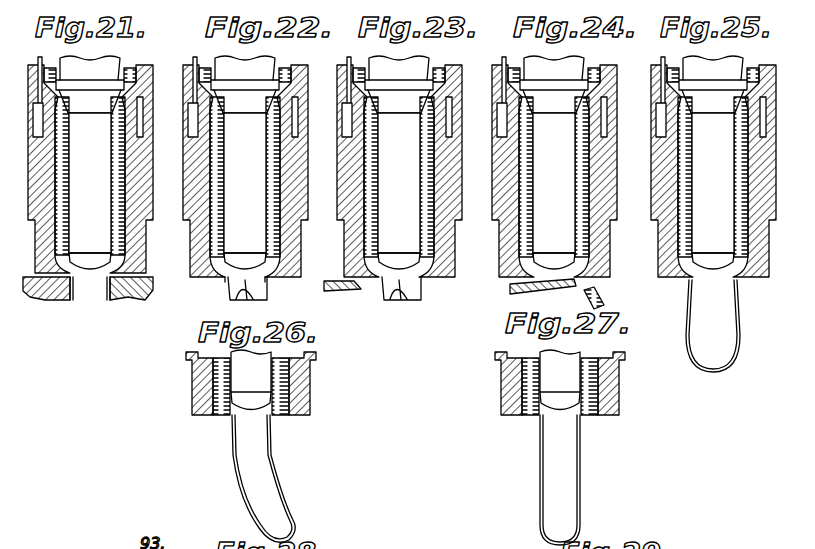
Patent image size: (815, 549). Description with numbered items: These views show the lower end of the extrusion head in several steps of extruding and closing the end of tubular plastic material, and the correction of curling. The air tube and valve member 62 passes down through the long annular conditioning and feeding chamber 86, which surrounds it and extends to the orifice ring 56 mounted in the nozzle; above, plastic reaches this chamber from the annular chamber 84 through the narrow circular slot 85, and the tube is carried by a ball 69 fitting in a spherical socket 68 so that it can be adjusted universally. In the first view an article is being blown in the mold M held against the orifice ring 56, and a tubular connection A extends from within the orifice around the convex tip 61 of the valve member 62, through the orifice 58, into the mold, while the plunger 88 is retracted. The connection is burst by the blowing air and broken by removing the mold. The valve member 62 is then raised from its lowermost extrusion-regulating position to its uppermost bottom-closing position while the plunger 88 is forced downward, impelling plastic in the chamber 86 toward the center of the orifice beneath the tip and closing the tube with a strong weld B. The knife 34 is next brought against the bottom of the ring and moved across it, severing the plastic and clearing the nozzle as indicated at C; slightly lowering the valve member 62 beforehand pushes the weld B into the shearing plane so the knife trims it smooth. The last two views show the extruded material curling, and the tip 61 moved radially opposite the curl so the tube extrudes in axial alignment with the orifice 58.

In FIG. 21, the orifice ring 56 is at (43, 297).
In FIG. 22, the orifice ring 56 is at (245, 181).
In FIG. 23, the orifice ring 56 is at (399, 185).
In FIG. 24, the orifice ring 56 is at (554, 167).
In FIG. 25, the orifice ring 56 is at (725, 178).
In FIG. 26, the orifice ring 56 is at (251, 404).
In FIG. 27, the orifice ring 56 is at (561, 403).
In FIG. 21, the orifice 58 is at (108, 309).
In FIG. 22, the orifice 58 is at (226, 292).
In FIG. 25, the orifice 58 is at (733, 326).
In FIG. 26, the orifice 58 is at (241, 478).
In FIG. 27, the orifice 58 is at (533, 480).
In FIG. 21, the convex tip 61 is at (85, 302).
In FIG. 22, the convex tip 61 is at (277, 264).
In FIG. 23, the convex tip 61 is at (432, 261).
In FIG. 25, the convex tip 61 is at (746, 258).
In FIG. 26, the convex tip 61 is at (206, 400).
In FIG. 27, the convex tip 61 is at (515, 398).
In FIG. 21, the air tube and valve member 62 is at (90, 183).
In FIG. 22, the air tube and valve member 62 is at (278, 183).
In FIG. 23, the air tube and valve member 62 is at (399, 183).
In FIG. 24, the air tube and valve member 62 is at (590, 191).
In FIG. 25, the air tube and valve member 62 is at (713, 183).
In FIG. 26, the air tube and valve member 62 is at (294, 371).
In FIG. 27, the air tube and valve member 62 is at (601, 371).
In FIG. 22, the spherical socket 68 is at (313, 97).
In FIG. 24, the spherical socket 68 is at (623, 109).
In FIG. 22, the ball 69 is at (257, 58).
In FIG. 24, the ball 69 is at (574, 58).
In FIG. 25, the ball 69 is at (736, 68).
In FIG. 23, the annular chamber 84 is at (421, 58).
In FIG. 21, the narrow circular slot 85 is at (154, 86).
In FIG. 21, the annular conditioning and feeding chamber 86 is at (114, 176).
In FIG. 22, the annular conditioning and feeding chamber 86 is at (245, 177).
In FIG. 23, the annular conditioning and feeding chamber 86 is at (425, 177).
In FIG. 24, the annular conditioning and feeding chamber 86 is at (582, 177).
In FIG. 25, the annular conditioning and feeding chamber 86 is at (713, 177).
In FIG. 21, the plunger 88 is at (90, 74).
In FIG. 22, the plunger 88 is at (245, 87).
In FIG. 23, the plunger 88 is at (399, 84).
In FIG. 24, the plunger 88 is at (554, 84).
In FIG. 25, the plunger 88 is at (720, 74).
In FIG. 23, the knife 34 is at (342, 304).
In FIG. 24, the knife 34 is at (528, 303).
In FIG. 21, the mold M is at (40, 305).
In FIG. 21, the tubular connection A is at (42, 325).
In FIG. 22, the weld B is at (247, 299).
In FIG. 23, the weld B is at (401, 308).
In FIG. 24, the severed plastic C is at (612, 298).